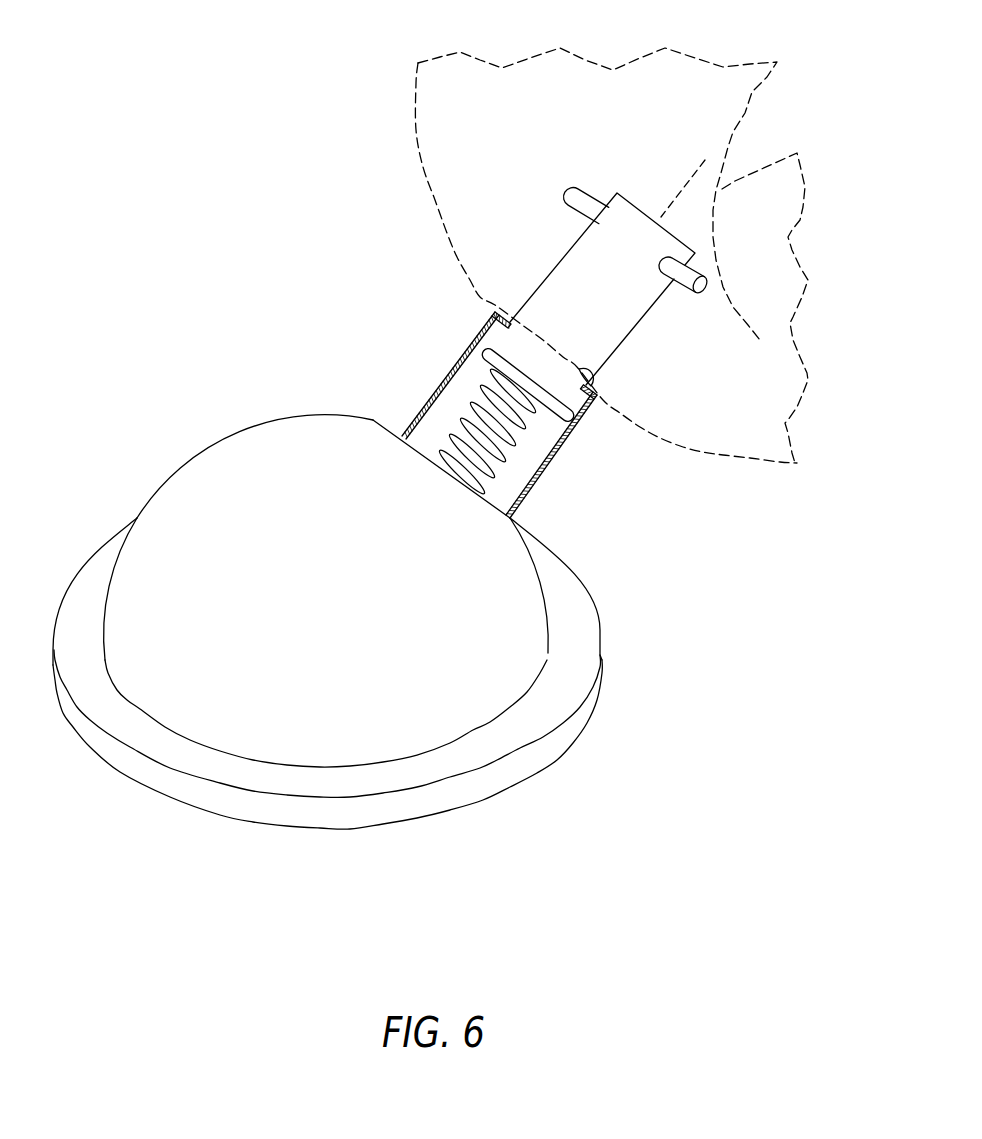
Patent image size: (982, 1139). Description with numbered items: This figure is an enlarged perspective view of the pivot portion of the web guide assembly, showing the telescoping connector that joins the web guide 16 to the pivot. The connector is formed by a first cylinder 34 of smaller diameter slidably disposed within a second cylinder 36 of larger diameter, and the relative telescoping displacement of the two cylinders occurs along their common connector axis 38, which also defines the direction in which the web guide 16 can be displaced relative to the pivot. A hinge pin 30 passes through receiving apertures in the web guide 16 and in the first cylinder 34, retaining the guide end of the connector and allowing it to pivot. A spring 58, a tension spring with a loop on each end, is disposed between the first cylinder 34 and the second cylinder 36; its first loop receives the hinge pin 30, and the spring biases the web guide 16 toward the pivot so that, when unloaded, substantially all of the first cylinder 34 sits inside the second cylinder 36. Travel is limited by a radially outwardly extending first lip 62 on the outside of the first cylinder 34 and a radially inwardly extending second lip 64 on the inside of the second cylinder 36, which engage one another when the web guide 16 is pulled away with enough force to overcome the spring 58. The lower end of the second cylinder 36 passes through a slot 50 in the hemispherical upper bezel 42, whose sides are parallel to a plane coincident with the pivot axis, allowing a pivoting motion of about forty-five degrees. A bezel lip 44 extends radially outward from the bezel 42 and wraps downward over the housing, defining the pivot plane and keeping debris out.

The web guide 16 is at (414, 131).
The hinge pin 30 is at (595, 191).
The first cylinder 34 is at (553, 268).
The second cylinder 36 is at (562, 462).
The connector axis 38 is at (686, 182).
The upper bezel 42 is at (233, 434).
The bezel lip 44 is at (600, 635).
The slot 50 is at (387, 422).
The spring 58 is at (470, 418).
The first lip 62 is at (530, 367).
The second lip 64 is at (590, 371).